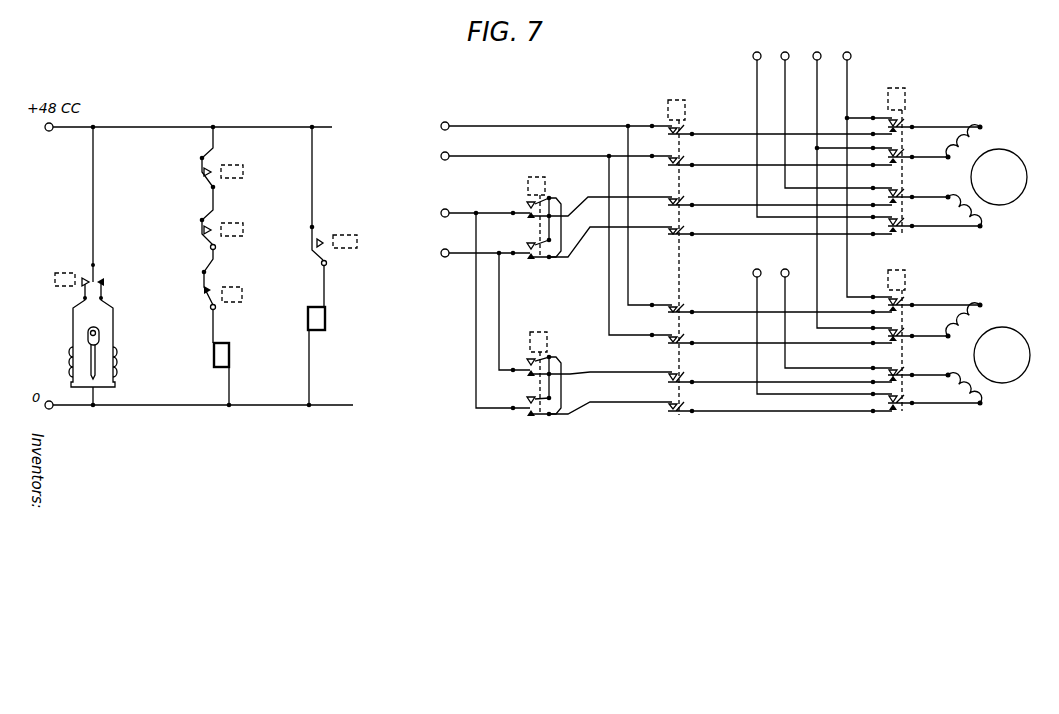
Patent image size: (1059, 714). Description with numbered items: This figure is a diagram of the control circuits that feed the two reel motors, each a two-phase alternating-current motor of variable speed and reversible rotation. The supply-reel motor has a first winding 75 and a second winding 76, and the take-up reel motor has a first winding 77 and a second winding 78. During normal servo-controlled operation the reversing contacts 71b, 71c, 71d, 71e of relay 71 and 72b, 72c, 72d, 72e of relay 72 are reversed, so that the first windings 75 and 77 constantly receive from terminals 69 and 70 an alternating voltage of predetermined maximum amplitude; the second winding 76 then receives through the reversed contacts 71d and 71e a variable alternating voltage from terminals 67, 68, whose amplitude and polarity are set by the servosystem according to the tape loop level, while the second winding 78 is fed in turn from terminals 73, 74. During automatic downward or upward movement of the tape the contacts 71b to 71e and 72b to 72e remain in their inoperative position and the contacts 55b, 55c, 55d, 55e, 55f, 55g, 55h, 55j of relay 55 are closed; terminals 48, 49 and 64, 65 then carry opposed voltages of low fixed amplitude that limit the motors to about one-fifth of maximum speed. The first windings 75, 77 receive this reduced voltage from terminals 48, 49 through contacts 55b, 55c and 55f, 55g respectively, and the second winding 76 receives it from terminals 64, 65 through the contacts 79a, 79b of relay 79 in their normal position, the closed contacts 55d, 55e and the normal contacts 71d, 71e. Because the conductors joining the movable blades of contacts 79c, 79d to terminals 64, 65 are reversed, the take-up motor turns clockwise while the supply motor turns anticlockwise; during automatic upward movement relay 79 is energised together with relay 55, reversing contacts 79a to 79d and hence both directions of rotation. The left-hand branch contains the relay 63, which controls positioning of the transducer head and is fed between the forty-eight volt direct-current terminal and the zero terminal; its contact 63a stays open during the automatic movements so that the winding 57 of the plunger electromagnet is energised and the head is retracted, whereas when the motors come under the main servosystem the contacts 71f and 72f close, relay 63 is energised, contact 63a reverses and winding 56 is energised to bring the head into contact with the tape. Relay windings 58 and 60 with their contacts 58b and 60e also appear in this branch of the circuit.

The terminal 48 is at (441, 128).
The terminal 49 is at (441, 158).
The relay 55 is at (683, 105).
The contact 55b is at (780, 125).
The contact 55c is at (780, 156).
The contact 55d is at (780, 196).
The contact 55e is at (780, 225).
The contact 55f is at (780, 302).
The contact 55g is at (780, 333).
The contact 55h is at (780, 372).
The contact 55j is at (780, 401).
The winding of plunger electromagnet 56 is at (72, 360).
The winding of plunger electromagnet 57 is at (116, 357).
The relay 58 is at (338, 250).
The relay contact 58b is at (320, 235).
The relay 60 is at (243, 297).
The relay contact 60e is at (210, 300).
The relay 63 is at (66, 289).
The contact 63a is at (88, 279).
The terminal 64 is at (441, 215).
The terminal 65 is at (441, 255).
The terminal 67 is at (753, 53).
The terminal 68 is at (782, 53).
The terminal 69 is at (814, 53).
The terminal 70 is at (852, 47).
The relay 71 is at (244, 175).
The reversing contact 71b is at (934, 120).
The reversing contact 71c is at (918, 151).
The reversing contact 71d is at (918, 190).
The reversing contact 71e is at (934, 219).
The contact 71f is at (200, 180).
The relay 72 is at (244, 236).
The reversing contact 72b is at (934, 299).
The reversing contact 72c is at (918, 330).
The reversing contact 72d is at (918, 370).
The reversing contact 72e is at (934, 397).
The contact 72f is at (200, 240).
The terminal 73 is at (753, 276).
The terminal 74 is at (787, 269).
The first winding 75 is at (984, 131).
The second winding 76 is at (984, 226).
The first winding 77 is at (998, 308).
The second winding 78 is at (984, 406).
The relay 79 is at (326, 322).
The contact 79a is at (528, 210).
The contact 79b is at (528, 248).
The contact 79c is at (526, 378).
The contact 79d is at (524, 418).